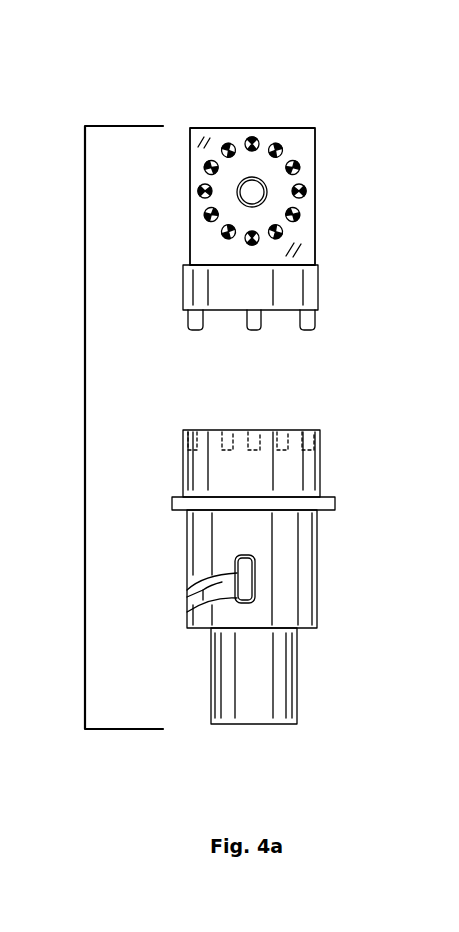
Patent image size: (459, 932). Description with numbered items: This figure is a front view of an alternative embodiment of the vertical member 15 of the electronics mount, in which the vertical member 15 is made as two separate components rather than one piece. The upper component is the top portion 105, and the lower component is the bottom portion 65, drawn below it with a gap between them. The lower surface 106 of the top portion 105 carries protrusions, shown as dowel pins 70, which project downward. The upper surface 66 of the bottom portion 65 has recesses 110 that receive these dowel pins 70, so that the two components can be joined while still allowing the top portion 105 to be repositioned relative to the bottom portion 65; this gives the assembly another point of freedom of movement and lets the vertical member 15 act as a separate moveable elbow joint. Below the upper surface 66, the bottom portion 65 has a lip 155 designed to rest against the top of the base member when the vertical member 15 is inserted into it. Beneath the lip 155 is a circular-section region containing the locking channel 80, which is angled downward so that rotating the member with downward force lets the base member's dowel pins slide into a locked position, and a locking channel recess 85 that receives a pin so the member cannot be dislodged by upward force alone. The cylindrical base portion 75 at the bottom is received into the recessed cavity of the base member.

The vertical member 15 is at (85, 398).
The top portion of the vertical member 105 is at (321, 245).
The recesses 110 is at (292, 161).
The lower surface of the top portion of the vertical member 106 is at (218, 312).
The dowel pins 70 is at (315, 322).
The bottom portion of the vertical member 65 is at (315, 568).
The upper surface of the bottom portion of the vertical member 66 is at (313, 430).
The lip of the vertical member 155 is at (458, 487).
The locking channel recess 85 is at (250, 558).
The locking channel 80 is at (280, 573).
The cylindrical base portion of the vertical member 75 is at (297, 700).